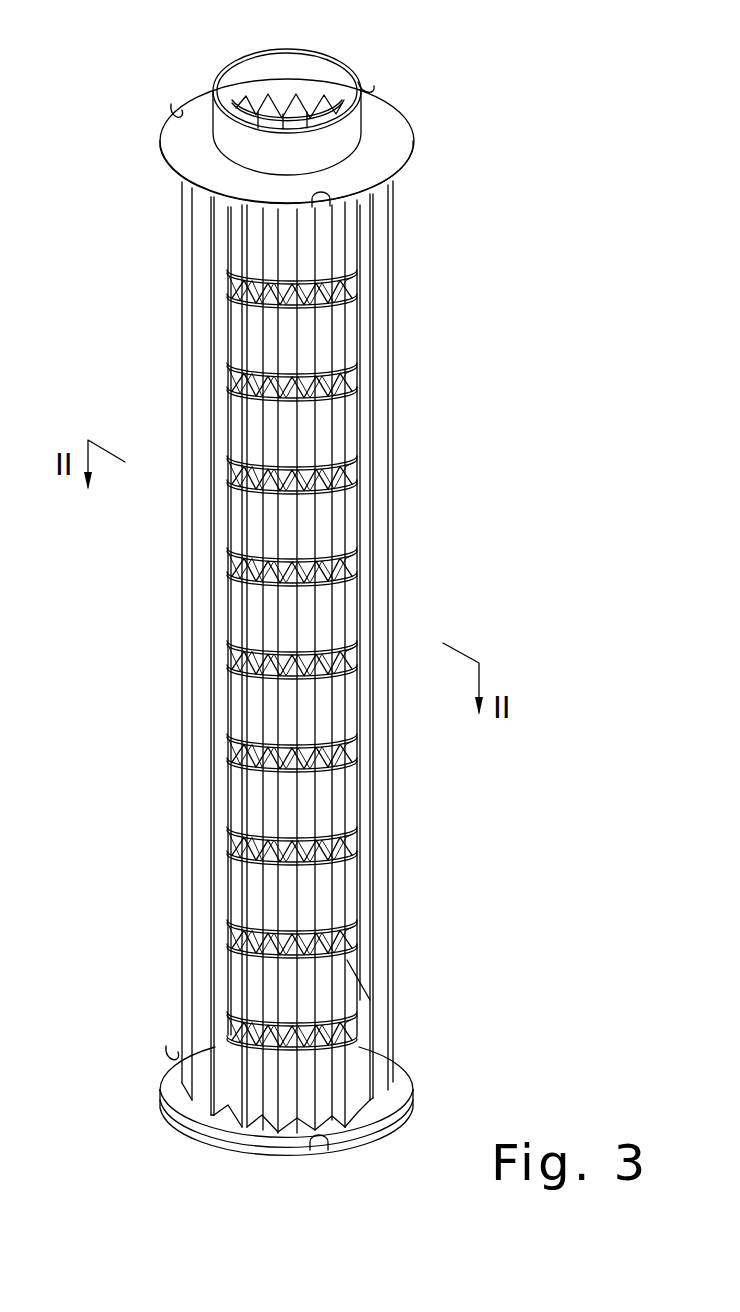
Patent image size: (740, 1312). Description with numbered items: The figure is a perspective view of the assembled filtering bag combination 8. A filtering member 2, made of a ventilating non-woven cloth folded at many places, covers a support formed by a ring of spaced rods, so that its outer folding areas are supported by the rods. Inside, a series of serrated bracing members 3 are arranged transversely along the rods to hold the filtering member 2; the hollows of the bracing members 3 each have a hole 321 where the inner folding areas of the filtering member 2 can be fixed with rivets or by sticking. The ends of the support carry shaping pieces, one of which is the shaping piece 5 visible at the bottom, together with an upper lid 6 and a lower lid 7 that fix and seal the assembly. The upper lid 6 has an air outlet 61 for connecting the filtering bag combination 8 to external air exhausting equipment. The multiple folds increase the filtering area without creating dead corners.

The filtering bag combination 8 is at (413, 63).
The upper lid 6 is at (398, 127).
The air outlet 61 is at (313, 63).
The bracing members 3 is at (238, 252).
The hole 321 is at (238, 328).
The filtering member 2 is at (383, 387).
The shaping piece 5 is at (407, 1070).
The lower lid 7 is at (357, 1150).